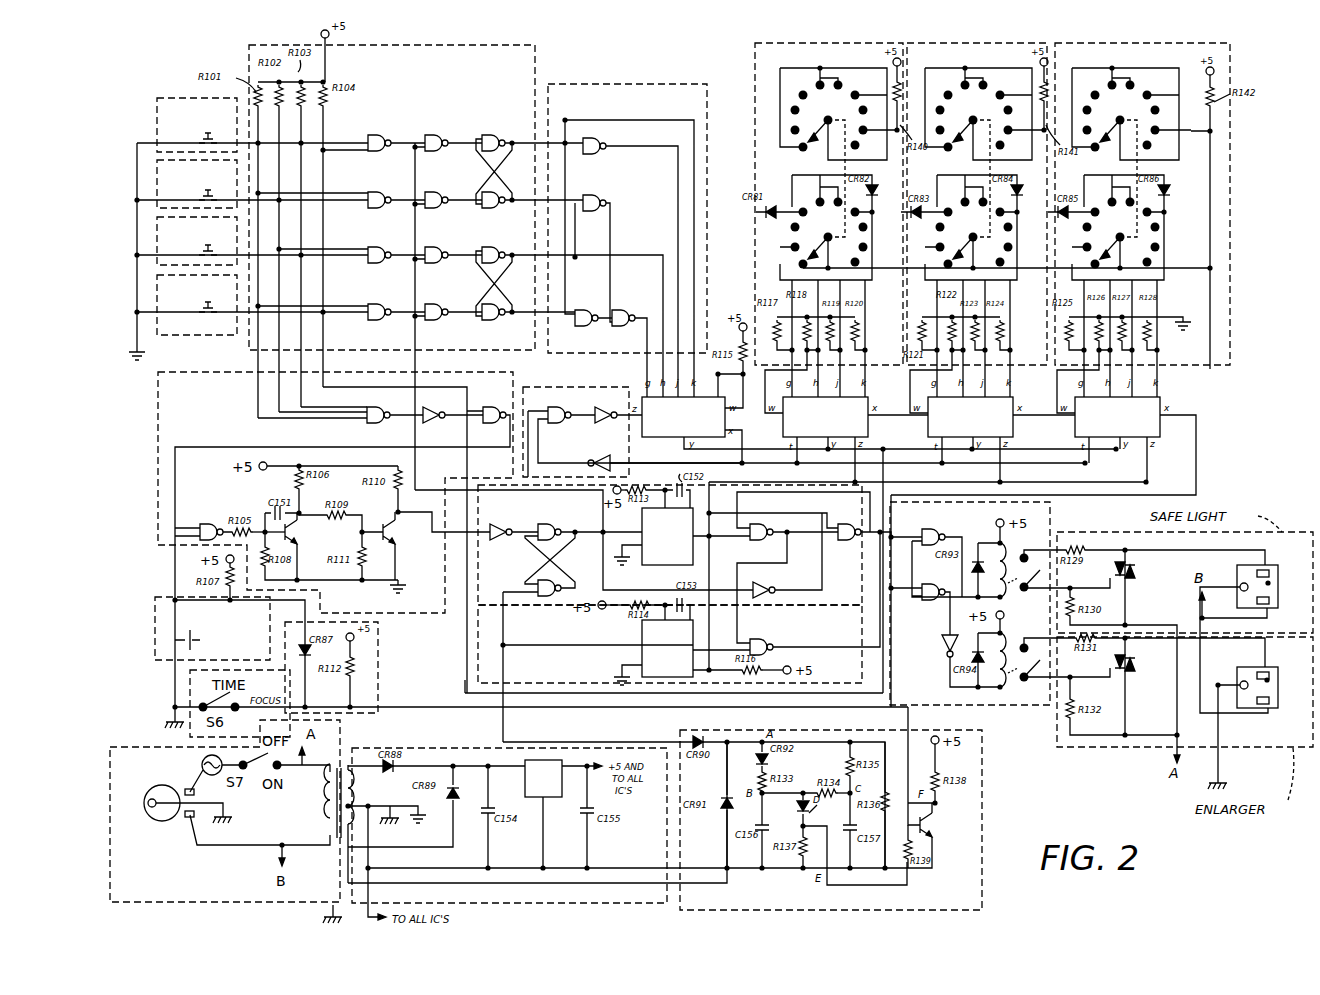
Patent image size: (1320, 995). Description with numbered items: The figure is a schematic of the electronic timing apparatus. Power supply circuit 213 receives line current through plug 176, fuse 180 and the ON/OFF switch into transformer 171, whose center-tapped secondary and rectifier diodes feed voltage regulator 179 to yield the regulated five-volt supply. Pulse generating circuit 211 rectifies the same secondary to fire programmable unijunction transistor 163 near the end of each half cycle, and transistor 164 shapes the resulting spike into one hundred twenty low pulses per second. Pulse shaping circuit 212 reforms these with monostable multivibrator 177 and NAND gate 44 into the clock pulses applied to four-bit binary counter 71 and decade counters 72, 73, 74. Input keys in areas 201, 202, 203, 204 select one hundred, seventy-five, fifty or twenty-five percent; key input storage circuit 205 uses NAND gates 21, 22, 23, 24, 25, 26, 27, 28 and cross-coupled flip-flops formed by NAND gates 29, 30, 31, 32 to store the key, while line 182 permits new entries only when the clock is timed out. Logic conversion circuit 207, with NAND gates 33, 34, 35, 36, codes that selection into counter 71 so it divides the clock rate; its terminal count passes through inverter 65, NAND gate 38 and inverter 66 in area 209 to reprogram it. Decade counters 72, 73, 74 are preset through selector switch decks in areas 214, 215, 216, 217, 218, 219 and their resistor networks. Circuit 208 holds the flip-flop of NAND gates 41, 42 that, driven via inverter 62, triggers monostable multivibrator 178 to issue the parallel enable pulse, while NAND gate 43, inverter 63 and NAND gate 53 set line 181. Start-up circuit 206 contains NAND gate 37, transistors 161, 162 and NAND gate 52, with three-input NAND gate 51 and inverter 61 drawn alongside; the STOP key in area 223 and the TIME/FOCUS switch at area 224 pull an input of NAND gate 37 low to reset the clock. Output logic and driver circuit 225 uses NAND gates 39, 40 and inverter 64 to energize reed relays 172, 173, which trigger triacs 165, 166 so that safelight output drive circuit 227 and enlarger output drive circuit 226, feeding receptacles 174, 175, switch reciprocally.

The 2-input NAND gate 21 is at (379, 136).
The 2-input NAND gate 22 is at (379, 193).
The 2-input NAND gate 23 is at (379, 248).
The 2-input NAND gate 24 is at (379, 305).
The 2-input NAND gate 25 is at (436, 136).
The 2-input NAND gate 26 is at (436, 193).
The 2-input NAND gate 27 is at (436, 248).
The 2-input NAND gate 28 is at (436, 305).
The 2-input NAND gate 29 is at (493, 136).
The 2-input NAND gate 30 is at (493, 193).
The 2-input NAND gate 31 is at (493, 248).
The 2-input NAND gate 32 is at (493, 305).
The NAND gate 33 is at (594, 139).
The NAND gate 34 is at (594, 196).
The NAND gate 35 is at (586, 311).
The NAND gate 36 is at (623, 311).
The NAND gate 37 is at (203, 525).
The NAND gate 38 is at (559, 408).
The NAND gate 39 is at (933, 530).
The NAND gate 40 is at (933, 585).
The NAND gate 41 is at (549, 525).
The NAND gate 42 is at (548, 598).
The NAND gate 43 is at (761, 541).
The 2-input NAND gate 44 is at (761, 643).
The 3-input NAND gate 51 is at (378, 408).
The NAND gate 52 is at (494, 408).
The NAND gate 53 is at (849, 525).
The inverter 61 is at (434, 408).
The inverter 62 is at (501, 526).
The inverter 63 is at (764, 584).
The inverter 64 is at (941, 646).
The inverter 65 is at (599, 456).
The inverter 66 is at (606, 408).
The four-bit binary counter 71 is at (683, 417).
The decade counter 72 is at (825, 417).
The decade counter 73 is at (970, 417).
The decade counter 74 is at (1117, 417).
The NPN transistor 161 is at (298, 546).
The NPN transistor 162 is at (396, 546).
The programmable unijunction transistor 163 is at (796, 814).
The transistor 164 is at (934, 835).
The triac 165 is at (1133, 587).
The triac 166 is at (1133, 686).
The transformer 171 is at (338, 815).
The reed relay 172 is at (994, 562).
The reed relay 173 is at (994, 653).
The receptacle 174 is at (1268, 580).
The receptacle 175 is at (1268, 681).
The plug 176 is at (155, 803).
The monostable multivibrator 177 is at (667, 648).
The monostable multivibrator 178 is at (667, 536).
The voltage regulator 179 is at (543, 778).
The fuse 180 is at (193, 764).
The line 181 is at (661, 667).
The line 182 is at (496, 479).
The 100% exposure switch circuit 201 is at (188, 123).
The 75% exposure switch circuit 202 is at (188, 183).
The 50% exposure switch circuit 203 is at (188, 240).
The 25% exposure switch circuit 204 is at (188, 297).
The key input storage circuit 205 is at (488, 95).
The start-up circuit 206 is at (210, 416).
The logic conversion circuit 207 is at (671, 109).
The circuit 208 is at (534, 511).
The oscillator 209 is at (573, 461).
The pulse generating circuit 211 is at (783, 900).
The pulse shaping circuit 212 is at (560, 676).
The power supply circuit 213 is at (171, 885).
The thumbwheel switch deck 214 is at (862, 42).
The thumbwheel switch deck 215 is at (1022, 42).
The thumbwheel switch deck 216 is at (1182, 42).
The thumbwheel switch deck 217 is at (827, 147).
The thumbwheel switch deck 218 is at (972, 147).
The thumbwheel switch deck 219 is at (1119, 147).
The stop switch circuit 223 is at (250, 627).
The time/focus switch circuit 224 is at (331, 667).
The output logic and driver circuit 225 is at (982, 519).
The enlarger output drive circuit 226 is at (1276, 740).
The safelight output drive circuit 227 is at (1308, 627).